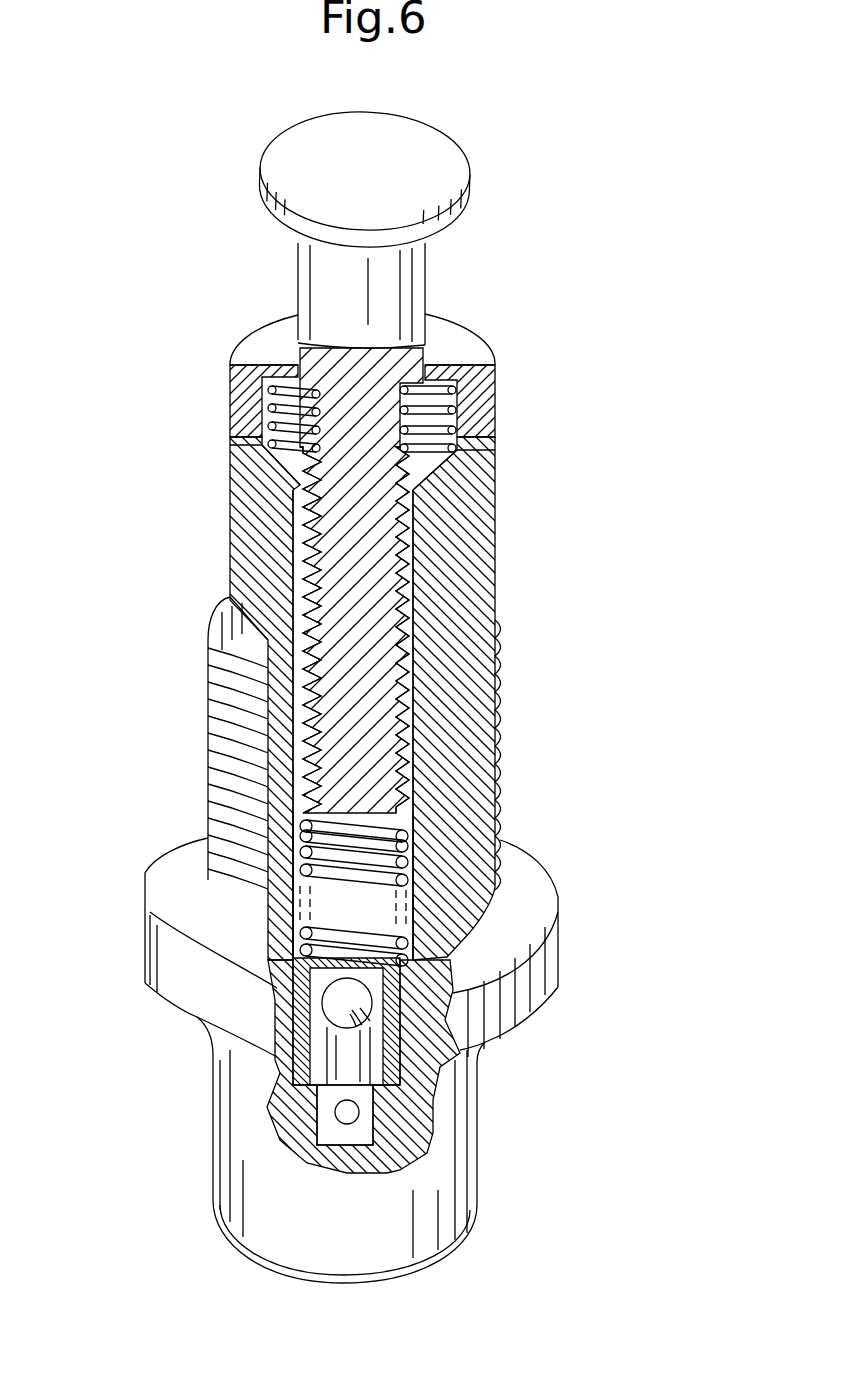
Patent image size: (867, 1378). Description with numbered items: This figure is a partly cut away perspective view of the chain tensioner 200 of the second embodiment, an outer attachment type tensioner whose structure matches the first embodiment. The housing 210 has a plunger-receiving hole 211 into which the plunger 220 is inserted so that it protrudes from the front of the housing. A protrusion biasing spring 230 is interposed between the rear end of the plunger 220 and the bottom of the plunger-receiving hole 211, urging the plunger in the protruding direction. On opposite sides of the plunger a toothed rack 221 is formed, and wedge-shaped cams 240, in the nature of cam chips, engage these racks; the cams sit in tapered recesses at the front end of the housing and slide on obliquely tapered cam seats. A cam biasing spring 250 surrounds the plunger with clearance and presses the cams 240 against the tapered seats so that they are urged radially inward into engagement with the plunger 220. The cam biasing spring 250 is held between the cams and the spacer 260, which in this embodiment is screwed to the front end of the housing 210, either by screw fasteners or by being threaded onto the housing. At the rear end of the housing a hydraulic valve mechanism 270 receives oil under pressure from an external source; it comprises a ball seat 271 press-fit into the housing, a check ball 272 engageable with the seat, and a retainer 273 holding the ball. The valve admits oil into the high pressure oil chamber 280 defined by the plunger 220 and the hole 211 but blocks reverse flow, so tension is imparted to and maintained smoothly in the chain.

The chain tensioner 200 is at (197, 233).
The housing 210 is at (527, 918).
The plunger-receiving hole 211 is at (415, 590).
The plunger 220 is at (372, 768).
The toothed rack 221 is at (405, 547).
The protrusion biasing spring 230 is at (405, 840).
The wedge-shaped cam 240 is at (455, 480).
The cam biasing spring 250 is at (493, 425).
The spacer 260 is at (493, 397).
The hydraulic valve mechanism 270 is at (523, 1085).
The ball seat 271 is at (420, 1060).
The check ball 272 is at (405, 1040).
The retainer 273 is at (395, 1015).
The high pressure oil chamber 280 is at (330, 905).